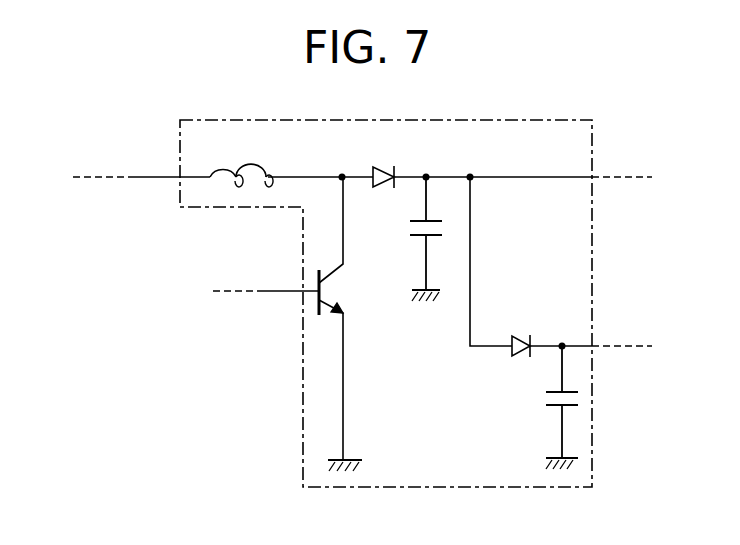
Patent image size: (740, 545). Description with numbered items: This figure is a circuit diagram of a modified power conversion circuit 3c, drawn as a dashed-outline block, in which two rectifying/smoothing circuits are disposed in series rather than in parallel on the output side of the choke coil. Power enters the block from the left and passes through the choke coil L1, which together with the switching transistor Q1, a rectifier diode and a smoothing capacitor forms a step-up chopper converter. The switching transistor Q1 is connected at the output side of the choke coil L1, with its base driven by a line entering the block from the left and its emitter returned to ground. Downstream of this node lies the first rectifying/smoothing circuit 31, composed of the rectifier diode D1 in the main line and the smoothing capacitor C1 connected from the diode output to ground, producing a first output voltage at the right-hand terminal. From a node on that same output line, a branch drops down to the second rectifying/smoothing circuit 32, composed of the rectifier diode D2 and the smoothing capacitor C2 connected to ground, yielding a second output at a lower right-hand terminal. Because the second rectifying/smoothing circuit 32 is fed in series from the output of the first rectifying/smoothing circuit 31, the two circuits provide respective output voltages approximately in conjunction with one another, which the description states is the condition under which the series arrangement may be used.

The power conversion circuit 3c is at (170, 144).
The choke coil L1 is at (240, 172).
The rectifier diode D1 is at (384, 172).
The first rectifying/smoothing circuit 31 is at (385, 221).
The smoothing capacitor C1 is at (411, 238).
The switching transistor Q1 is at (342, 293).
The rectifier diode D2 is at (522, 338).
The second rectifying/smoothing circuit 32 is at (502, 388).
The smoothing capacitor C2 is at (542, 402).